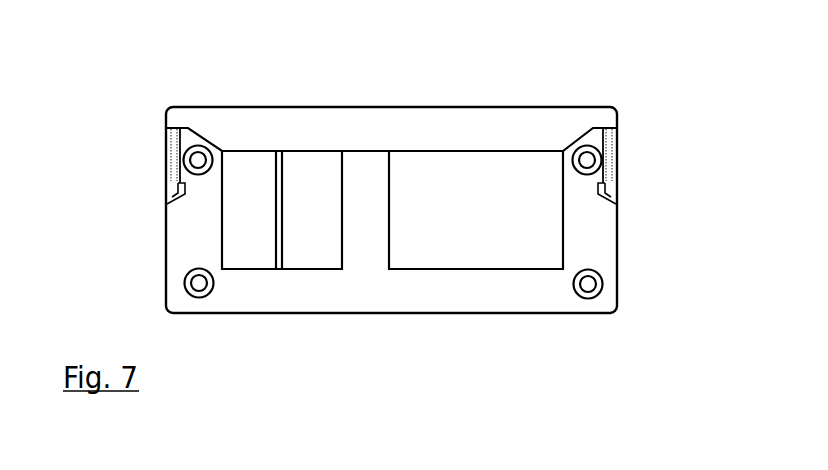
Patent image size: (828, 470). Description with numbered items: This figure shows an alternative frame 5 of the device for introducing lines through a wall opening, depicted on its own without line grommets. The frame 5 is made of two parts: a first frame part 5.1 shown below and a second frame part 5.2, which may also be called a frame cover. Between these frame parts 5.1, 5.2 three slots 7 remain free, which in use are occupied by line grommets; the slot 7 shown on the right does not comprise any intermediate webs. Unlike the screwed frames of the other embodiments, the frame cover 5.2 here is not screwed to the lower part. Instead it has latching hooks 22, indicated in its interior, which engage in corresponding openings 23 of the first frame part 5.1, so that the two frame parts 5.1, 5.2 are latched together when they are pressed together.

The frame 5 is at (146, 100).
The first frame part 5.1 is at (392, 299).
The second frame part 5.2 is at (342, 120).
The slots 7 is at (486, 177).
The latching hooks 22 is at (170, 187).
The openings 23 is at (169, 200).